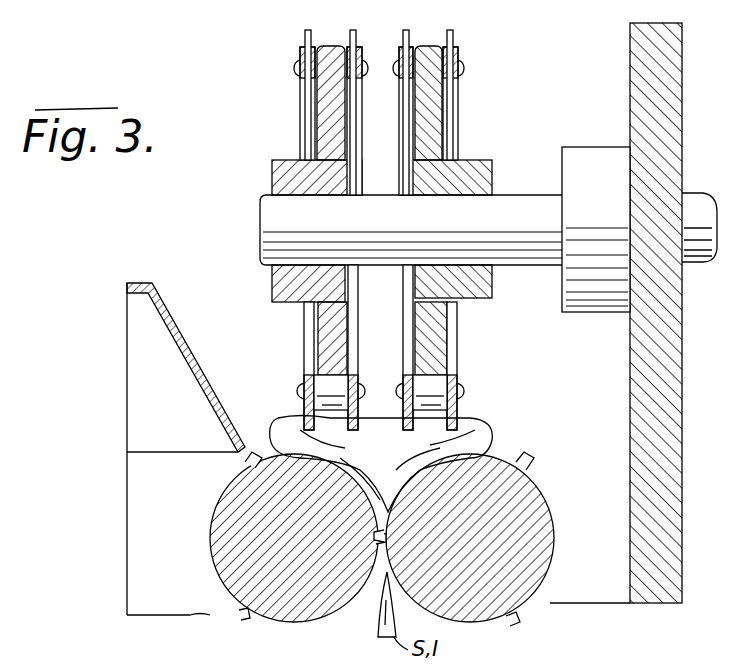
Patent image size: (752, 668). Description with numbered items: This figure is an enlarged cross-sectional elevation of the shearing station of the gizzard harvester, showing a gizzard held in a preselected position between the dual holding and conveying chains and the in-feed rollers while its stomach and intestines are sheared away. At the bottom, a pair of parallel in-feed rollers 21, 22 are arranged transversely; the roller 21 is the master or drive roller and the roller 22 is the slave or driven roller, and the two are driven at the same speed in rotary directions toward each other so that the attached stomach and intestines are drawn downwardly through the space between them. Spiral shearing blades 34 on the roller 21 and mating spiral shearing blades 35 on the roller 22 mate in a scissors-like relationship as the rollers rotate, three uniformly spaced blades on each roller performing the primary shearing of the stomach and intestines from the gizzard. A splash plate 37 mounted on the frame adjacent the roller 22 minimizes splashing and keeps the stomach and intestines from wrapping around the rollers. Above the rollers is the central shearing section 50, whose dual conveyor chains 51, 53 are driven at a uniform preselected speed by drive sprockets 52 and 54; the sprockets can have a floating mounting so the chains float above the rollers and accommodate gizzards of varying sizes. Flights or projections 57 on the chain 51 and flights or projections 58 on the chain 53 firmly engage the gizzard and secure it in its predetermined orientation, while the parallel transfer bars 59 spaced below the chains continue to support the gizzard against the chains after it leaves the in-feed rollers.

The in-feed roller 21 is at (552, 520).
The in-feed roller 22 is at (215, 533).
The spiral shearing blades 34 is at (526, 460).
The spiral shearing blades 35 is at (245, 463).
The splash plate 37 is at (197, 364).
The central shearing section 50 is at (262, 100).
The chain 51 is at (458, 68).
The drive sprocket 52 is at (470, 180).
The chain 53 is at (298, 66).
The drive sprocket 54 is at (270, 162).
The flights or projections 57 is at (478, 418).
The flights or projections 58 is at (280, 430).
The transfer bars 59 is at (362, 428).